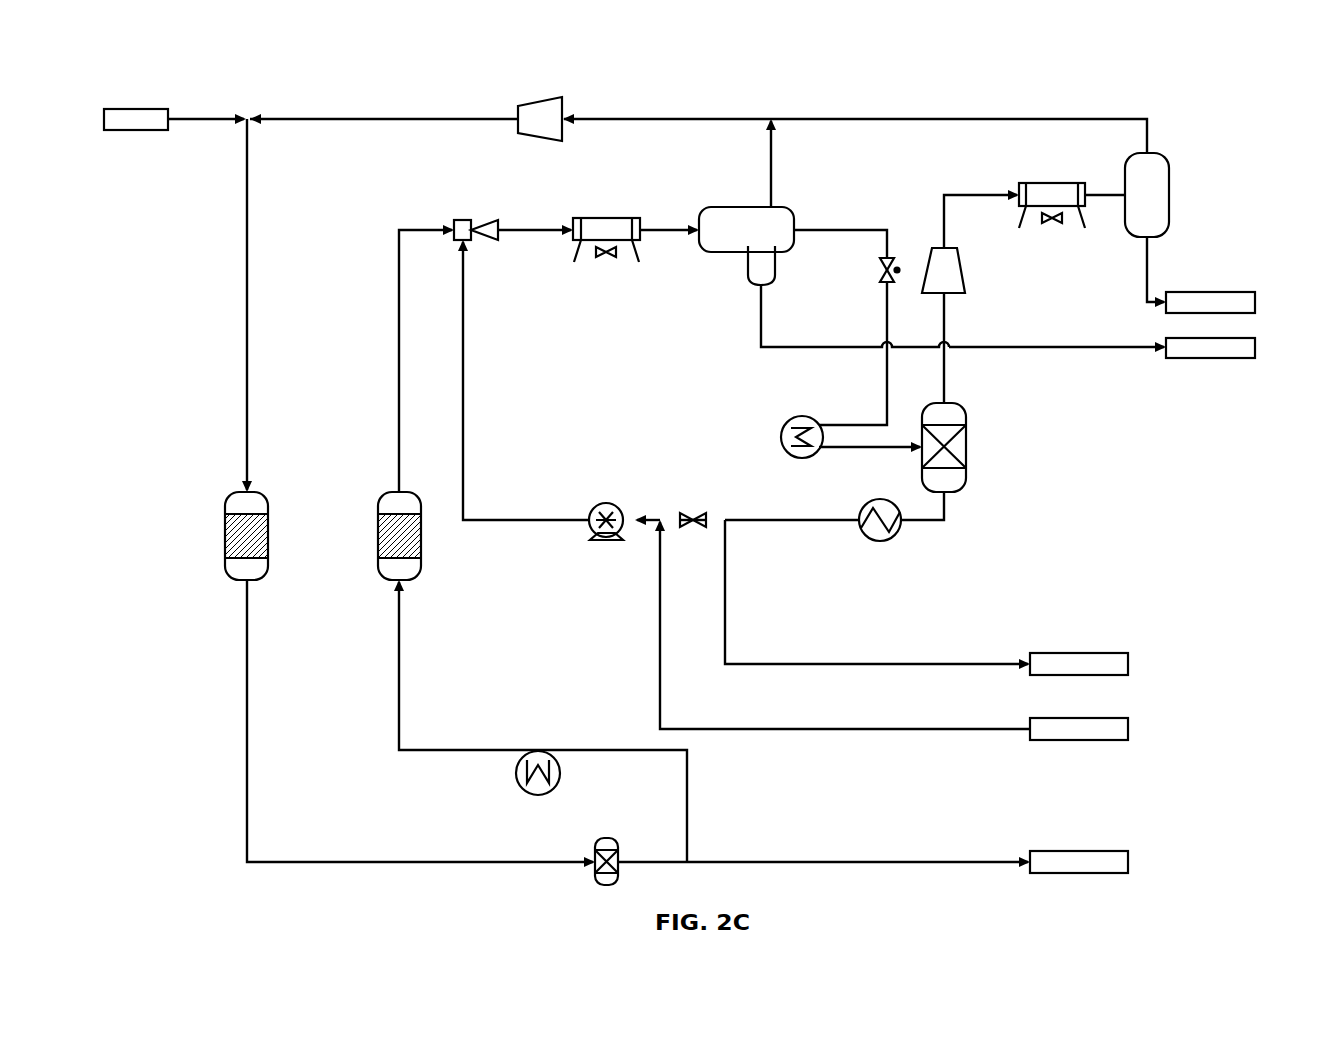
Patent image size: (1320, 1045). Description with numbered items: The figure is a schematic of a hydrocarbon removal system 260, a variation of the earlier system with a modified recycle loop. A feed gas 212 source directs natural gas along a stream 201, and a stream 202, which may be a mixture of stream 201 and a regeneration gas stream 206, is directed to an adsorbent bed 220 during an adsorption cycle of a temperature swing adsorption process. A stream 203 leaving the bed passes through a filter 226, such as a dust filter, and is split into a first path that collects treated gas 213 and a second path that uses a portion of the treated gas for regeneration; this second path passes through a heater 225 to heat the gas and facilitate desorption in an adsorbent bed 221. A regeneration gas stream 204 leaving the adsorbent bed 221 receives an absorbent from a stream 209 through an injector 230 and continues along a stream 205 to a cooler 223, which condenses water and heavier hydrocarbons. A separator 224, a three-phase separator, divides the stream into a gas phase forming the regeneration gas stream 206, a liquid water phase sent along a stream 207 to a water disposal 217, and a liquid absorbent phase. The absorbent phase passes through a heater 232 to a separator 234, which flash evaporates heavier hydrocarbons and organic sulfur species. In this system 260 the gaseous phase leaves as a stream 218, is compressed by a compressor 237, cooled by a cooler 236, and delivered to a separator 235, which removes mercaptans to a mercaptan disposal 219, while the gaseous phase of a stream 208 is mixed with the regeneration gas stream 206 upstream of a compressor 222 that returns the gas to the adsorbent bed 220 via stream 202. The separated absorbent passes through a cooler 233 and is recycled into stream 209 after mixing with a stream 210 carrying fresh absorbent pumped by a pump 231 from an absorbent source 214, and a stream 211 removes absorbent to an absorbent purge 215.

The system 260 is at (170, 66).
The stream 201 is at (200, 118).
The feed gas 212 is at (137, 131).
The stream 202 is at (246, 338).
The adsorbent bed 220 is at (224, 530).
The adsorbent bed 221 is at (376, 530).
The stream 203 is at (245, 694).
The regeneration gas stream 204 is at (398, 338).
The injector 230 is at (463, 218).
The stream 205 is at (531, 228).
The cooler 223 is at (618, 190).
The compressor 222 is at (555, 76).
The regeneration gas stream 206 is at (704, 117).
The stream 208 is at (954, 117).
The separator 224 is at (717, 254).
The heater 232 is at (803, 414).
The compressor 237 is at (965, 268).
The stream 218 is at (945, 306).
The separator 234 is at (967, 448).
The stream 207 is at (1040, 346).
The water disposal 217 is at (1215, 359).
The mercaptan disposal 219 is at (1222, 262).
The cooler 236 is at (1068, 157).
The separator 235 is at (1170, 210).
The cooler 233 is at (880, 542).
The pump 231 is at (606, 542).
The stream 209 is at (531, 518).
The stream 211 is at (902, 663).
The stream 210 is at (902, 728).
The absorbent purge 215 is at (1088, 625).
The absorbent source 214 is at (1079, 742).
The treated gas 213 is at (1079, 875).
The heater 225 is at (540, 796).
The filter 226 is at (608, 836).